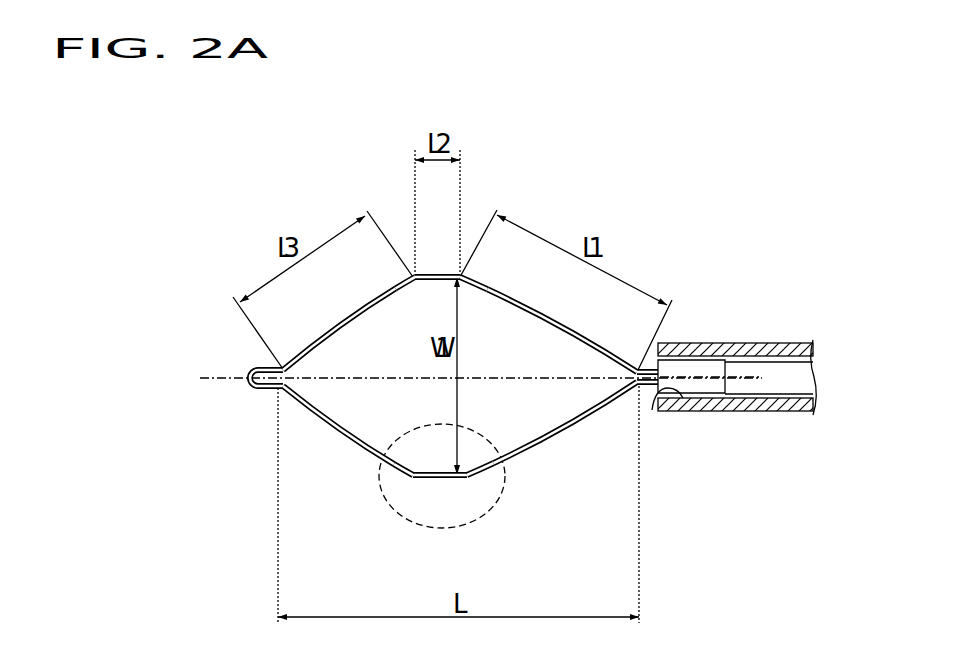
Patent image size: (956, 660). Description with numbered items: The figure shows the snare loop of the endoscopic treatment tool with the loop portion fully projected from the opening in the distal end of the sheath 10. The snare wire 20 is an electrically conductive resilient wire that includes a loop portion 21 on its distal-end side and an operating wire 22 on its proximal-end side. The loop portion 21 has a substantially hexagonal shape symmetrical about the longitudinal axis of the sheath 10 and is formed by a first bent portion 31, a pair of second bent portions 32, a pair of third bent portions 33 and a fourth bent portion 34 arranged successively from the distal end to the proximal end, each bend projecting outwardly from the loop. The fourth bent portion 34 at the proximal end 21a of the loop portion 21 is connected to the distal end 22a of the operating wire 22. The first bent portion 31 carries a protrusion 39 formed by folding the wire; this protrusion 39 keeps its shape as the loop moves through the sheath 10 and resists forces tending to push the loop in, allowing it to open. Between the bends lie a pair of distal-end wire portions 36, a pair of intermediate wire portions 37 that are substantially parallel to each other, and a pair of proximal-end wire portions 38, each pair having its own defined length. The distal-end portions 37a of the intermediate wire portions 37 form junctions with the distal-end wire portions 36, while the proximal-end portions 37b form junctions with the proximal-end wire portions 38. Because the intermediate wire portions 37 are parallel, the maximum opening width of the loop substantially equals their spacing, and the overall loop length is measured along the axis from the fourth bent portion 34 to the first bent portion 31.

The sheath 10 is at (729, 373).
The snare wire 20 is at (471, 372).
The loop portion 21 is at (471, 372).
The proximal end of the loop portion 21a is at (683, 398).
The operating wire 22 is at (777, 386).
The distal end of the operating wire 22a is at (652, 410).
The first bent portion 31 is at (224, 349).
The second bent portions 32 is at (412, 275).
The third bent portions 33 is at (462, 276).
The fourth bent portion 34 is at (660, 343).
The distal-end wire portions 36 is at (333, 323).
The intermediate wire portions 37 is at (438, 273).
The distal-end portions of the intermediate wire portions 37a is at (367, 372).
The proximal-end portions of the intermediate wire portions 37b is at (510, 372).
The proximal-end wire portions 38 is at (554, 328).
The protrusion 39 is at (262, 364).